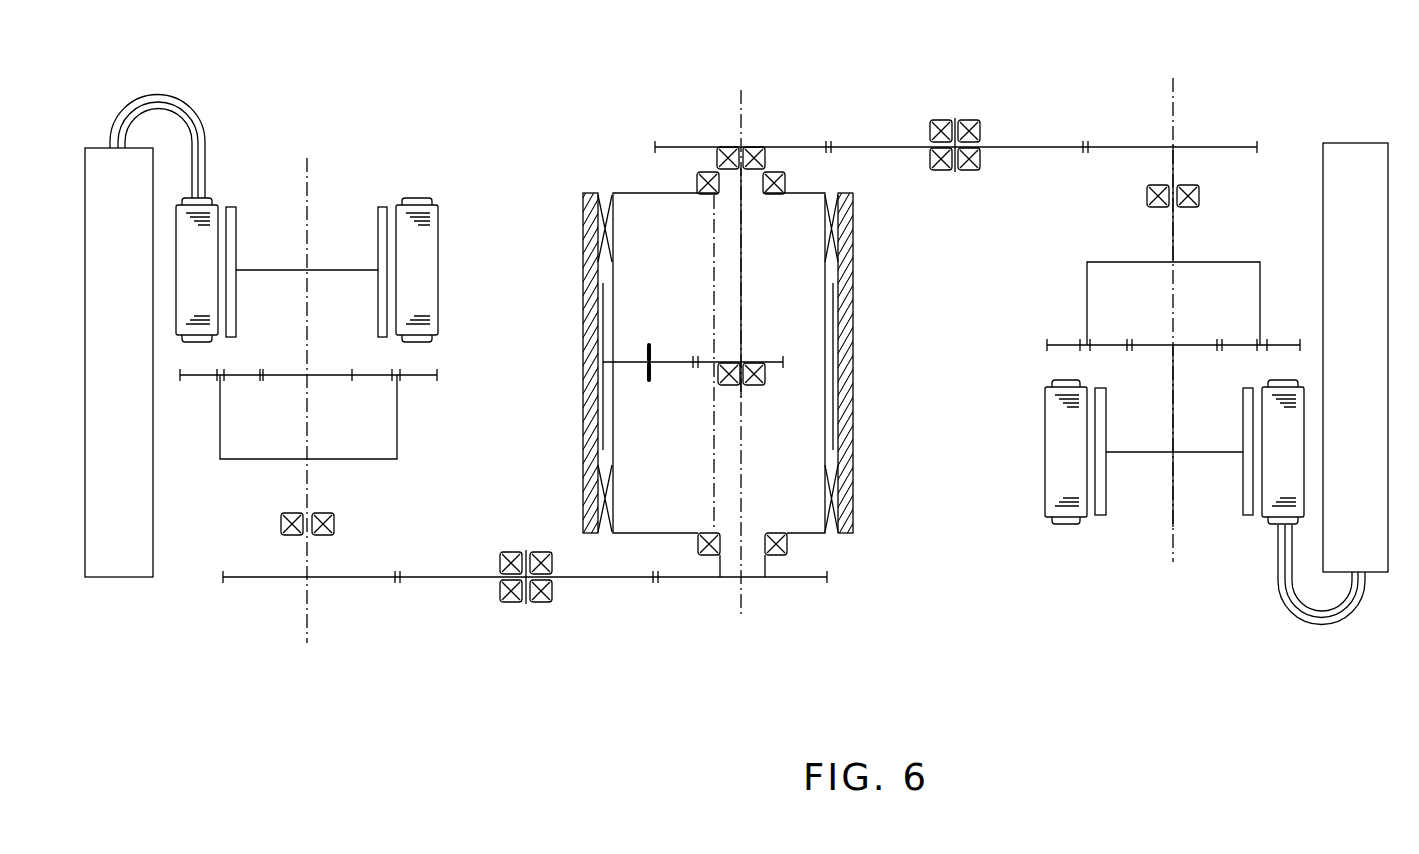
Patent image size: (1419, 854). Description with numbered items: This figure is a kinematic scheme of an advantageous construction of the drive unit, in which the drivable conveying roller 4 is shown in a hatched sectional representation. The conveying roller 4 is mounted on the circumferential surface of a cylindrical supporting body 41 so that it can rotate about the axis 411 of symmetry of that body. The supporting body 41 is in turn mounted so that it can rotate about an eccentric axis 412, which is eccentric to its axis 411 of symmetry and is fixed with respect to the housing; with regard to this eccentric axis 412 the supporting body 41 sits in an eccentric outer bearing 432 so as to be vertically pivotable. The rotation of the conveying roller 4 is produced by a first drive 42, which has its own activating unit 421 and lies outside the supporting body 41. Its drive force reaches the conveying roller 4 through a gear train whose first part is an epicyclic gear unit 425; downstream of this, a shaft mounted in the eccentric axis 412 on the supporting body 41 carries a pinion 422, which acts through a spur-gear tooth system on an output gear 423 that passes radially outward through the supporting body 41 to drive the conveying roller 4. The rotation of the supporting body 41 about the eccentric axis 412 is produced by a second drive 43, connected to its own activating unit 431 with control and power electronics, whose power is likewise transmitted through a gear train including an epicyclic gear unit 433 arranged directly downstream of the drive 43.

The drivable conveying roller 4 is at (722, 364).
The cylindrical supporting body 41 is at (642, 195).
The axis of symmetry 411 is at (715, 243).
The eccentric axis 412 is at (747, 607).
The first drive 42 is at (1101, 513).
The activating unit 421 is at (1347, 157).
The pinion 422 is at (772, 358).
The output gear 423 is at (628, 363).
The epicyclic gear unit 425 is at (1130, 262).
The second drive 43 is at (383, 207).
The activating unit 431 is at (115, 557).
The eccentric outer bearing 432 is at (692, 190).
The epicyclic gear unit 433 is at (350, 459).